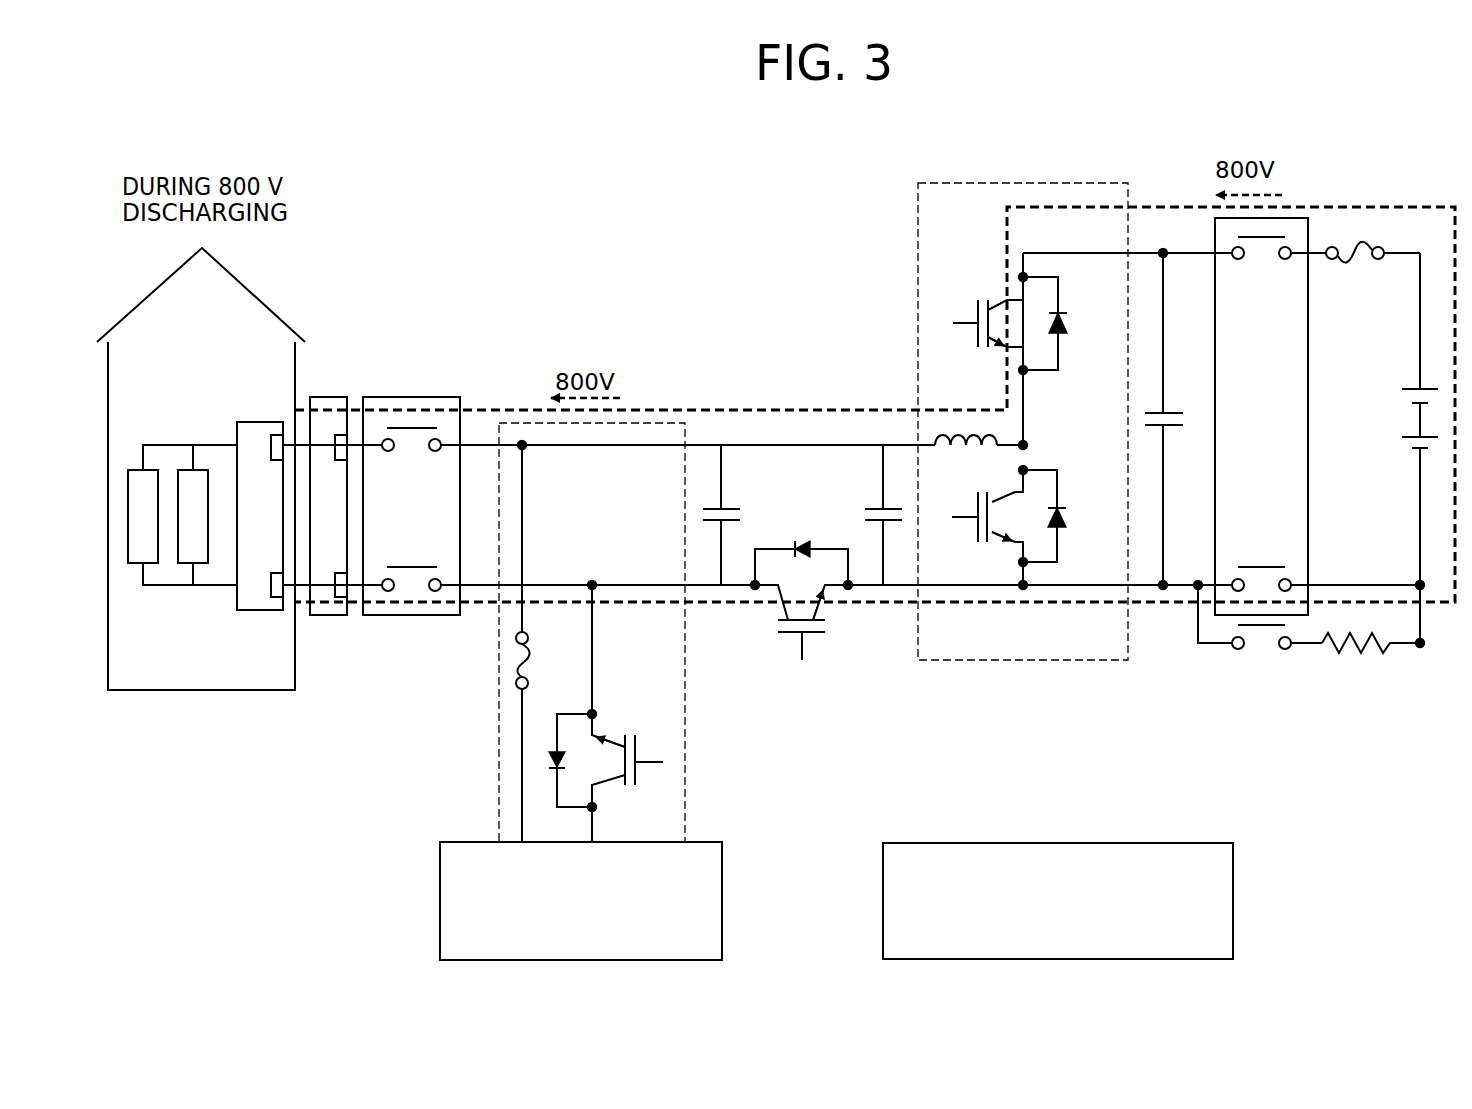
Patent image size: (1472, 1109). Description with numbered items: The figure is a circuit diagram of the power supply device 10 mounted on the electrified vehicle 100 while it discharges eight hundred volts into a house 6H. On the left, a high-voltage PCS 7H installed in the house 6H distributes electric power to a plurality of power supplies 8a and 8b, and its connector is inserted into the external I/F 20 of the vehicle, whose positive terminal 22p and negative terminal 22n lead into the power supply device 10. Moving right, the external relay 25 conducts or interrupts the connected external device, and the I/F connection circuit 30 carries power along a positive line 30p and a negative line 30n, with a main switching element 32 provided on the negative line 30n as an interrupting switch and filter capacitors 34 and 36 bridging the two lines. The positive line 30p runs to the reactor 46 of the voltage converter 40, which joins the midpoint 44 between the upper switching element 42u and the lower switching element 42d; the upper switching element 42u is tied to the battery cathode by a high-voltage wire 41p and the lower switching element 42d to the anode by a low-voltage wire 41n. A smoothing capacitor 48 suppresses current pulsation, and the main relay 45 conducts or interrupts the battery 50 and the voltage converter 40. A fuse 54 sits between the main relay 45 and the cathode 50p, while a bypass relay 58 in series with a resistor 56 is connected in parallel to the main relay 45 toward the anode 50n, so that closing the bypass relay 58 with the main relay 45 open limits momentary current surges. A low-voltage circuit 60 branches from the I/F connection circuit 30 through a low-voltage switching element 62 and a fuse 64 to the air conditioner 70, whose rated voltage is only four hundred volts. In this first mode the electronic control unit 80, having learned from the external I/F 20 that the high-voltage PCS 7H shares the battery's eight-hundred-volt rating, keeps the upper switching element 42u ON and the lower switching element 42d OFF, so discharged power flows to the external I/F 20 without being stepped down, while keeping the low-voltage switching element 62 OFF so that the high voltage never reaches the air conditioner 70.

The power supply device 10 is at (858, 195).
The electrified vehicle 100 is at (568, 242).
The house 6H is at (168, 300).
The high-voltage PCS 7H is at (255, 612).
The power supply 8a is at (193, 515).
The power supply 8b is at (143, 515).
The external I/F 20 is at (328, 617).
The positive terminal 22p is at (342, 438).
The negative terminal 22n is at (343, 590).
The external relay 25 is at (435, 395).
The I/F connection circuit 30 is at (836, 540).
The positive line 30p is at (818, 447).
The negative line 30n is at (870, 592).
The main switching element 32 is at (802, 672).
The filter capacitor 34 is at (727, 503).
The filter capacitor 36 is at (875, 500).
The voltage converter 40 is at (1023, 420).
The high-voltage wire 41p is at (1145, 250).
The low-voltage wire 41n is at (1180, 592).
The upper switching element 42u is at (1040, 266).
The lower switching element 42d is at (1040, 576).
The midpoint 44 is at (1032, 447).
The reactor 46 is at (963, 437).
The smoothing capacitor 48 is at (1185, 412).
The main relay 45 is at (1298, 216).
The battery 50 is at (1364, 421).
The cathode 50p is at (1410, 386).
The anode 50n is at (1412, 449).
The fuse 54 is at (1332, 246).
The resistor 56 is at (1350, 648).
The bypass relay 58 is at (1262, 654).
The low-voltage circuit 60 is at (594, 632).
The low-voltage switching element 62 is at (678, 761).
The fuse 64 is at (510, 683).
The air conditioner 70 is at (723, 902).
The electronic control unit 80 is at (1235, 902).